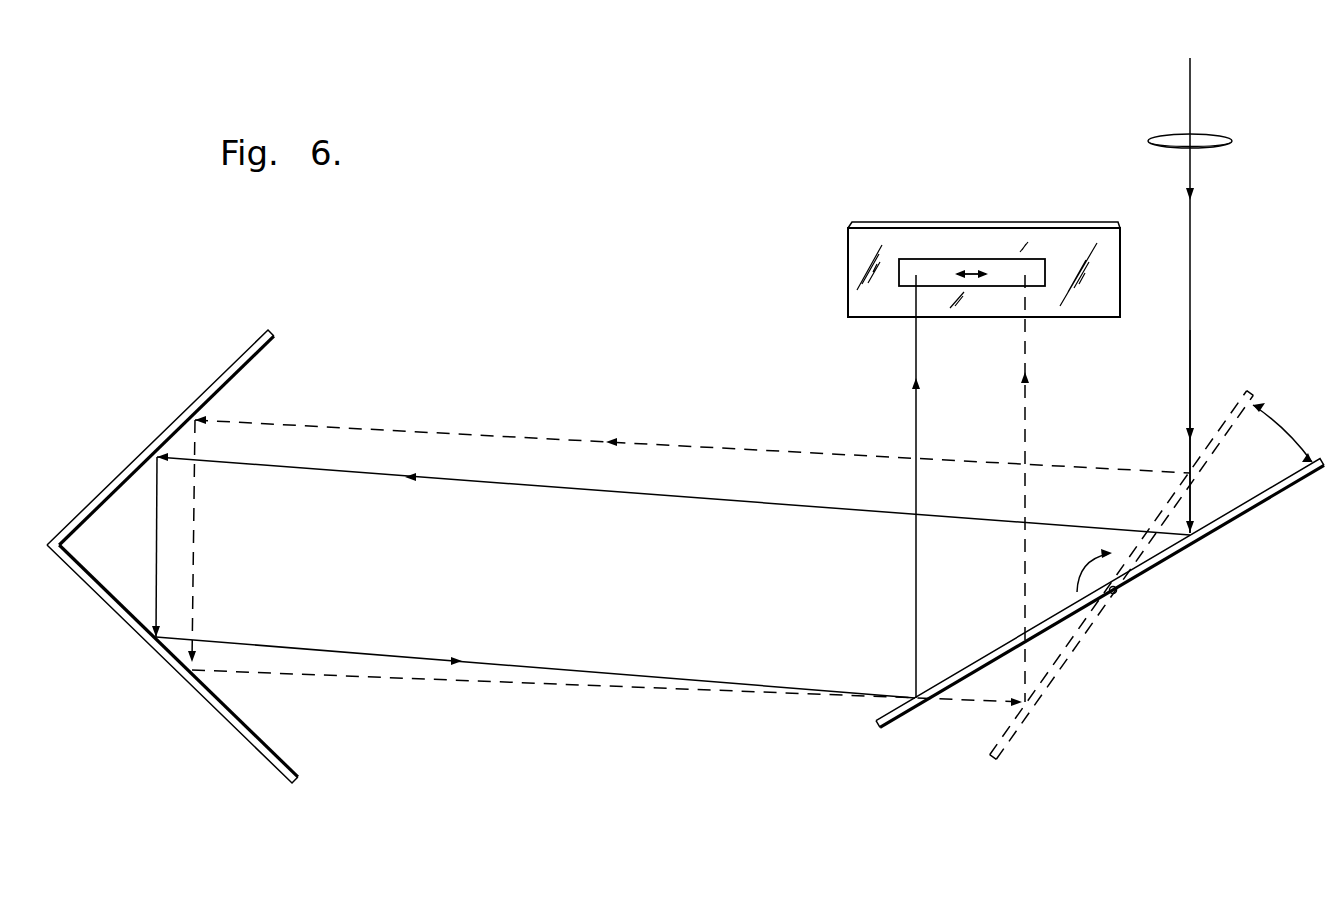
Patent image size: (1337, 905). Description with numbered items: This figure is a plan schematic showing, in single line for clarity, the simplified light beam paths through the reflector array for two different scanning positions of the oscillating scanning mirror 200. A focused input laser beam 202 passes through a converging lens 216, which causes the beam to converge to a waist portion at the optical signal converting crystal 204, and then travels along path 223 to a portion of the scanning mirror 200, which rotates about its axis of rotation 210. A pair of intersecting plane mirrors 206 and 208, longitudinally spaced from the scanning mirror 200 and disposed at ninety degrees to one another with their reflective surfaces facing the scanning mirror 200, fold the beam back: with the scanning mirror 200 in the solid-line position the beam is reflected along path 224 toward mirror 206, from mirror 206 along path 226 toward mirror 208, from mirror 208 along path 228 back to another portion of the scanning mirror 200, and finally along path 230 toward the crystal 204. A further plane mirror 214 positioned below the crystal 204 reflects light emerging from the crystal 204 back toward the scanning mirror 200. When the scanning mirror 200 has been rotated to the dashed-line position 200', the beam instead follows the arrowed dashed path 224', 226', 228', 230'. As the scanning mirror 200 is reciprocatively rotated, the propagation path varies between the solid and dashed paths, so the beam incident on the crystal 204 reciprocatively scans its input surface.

The oscillating scanning mirror 200 is at (1100, 593).
The rotated position of scanning mirror 200' is at (1151, 575).
The input laser beam 202 is at (1192, 88).
The optical signal converting crystal 204 is at (985, 290).
The plane mirror 206 is at (186, 410).
The plane mirror 208 is at (253, 752).
The axis of rotation 210 is at (1118, 594).
The plane mirror 214 is at (848, 253).
The converging lens 216 is at (1232, 143).
The beam path 223 is at (1190, 342).
The beam path 224 is at (673, 494).
The beam path 224' is at (692, 435).
The beam path 226 is at (128, 547).
The beam path 226' is at (228, 541).
The beam path 228 is at (535, 658).
The beam path 228' is at (607, 701).
The beam path 230 is at (882, 486).
The beam path 230' is at (1056, 488).